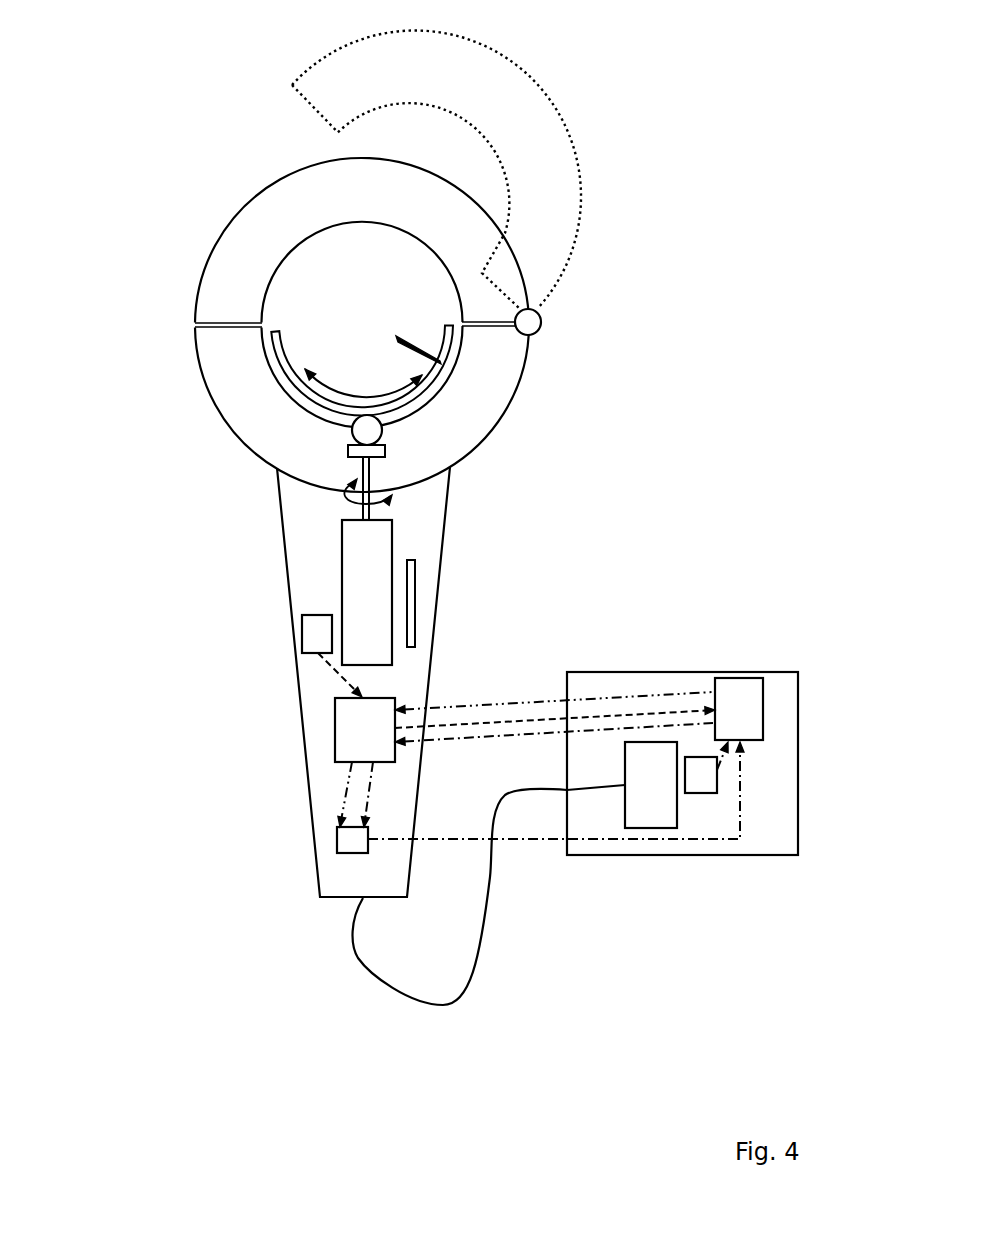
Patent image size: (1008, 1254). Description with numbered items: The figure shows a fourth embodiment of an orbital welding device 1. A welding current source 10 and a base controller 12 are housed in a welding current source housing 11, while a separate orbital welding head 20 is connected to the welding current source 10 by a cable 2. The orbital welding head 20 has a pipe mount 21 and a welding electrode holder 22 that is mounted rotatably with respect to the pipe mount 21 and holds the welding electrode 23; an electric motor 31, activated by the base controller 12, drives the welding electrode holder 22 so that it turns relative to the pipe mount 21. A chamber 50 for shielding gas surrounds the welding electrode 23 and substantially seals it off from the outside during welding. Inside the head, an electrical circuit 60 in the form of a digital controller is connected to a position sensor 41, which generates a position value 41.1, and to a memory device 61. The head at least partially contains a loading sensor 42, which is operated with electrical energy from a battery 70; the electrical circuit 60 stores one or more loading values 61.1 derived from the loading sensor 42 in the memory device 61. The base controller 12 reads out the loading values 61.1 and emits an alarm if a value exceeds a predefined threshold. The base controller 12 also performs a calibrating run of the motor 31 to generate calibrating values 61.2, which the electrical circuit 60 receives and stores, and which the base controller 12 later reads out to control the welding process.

The orbital welding device 1 is at (780, 287).
The cable 2 is at (358, 958).
The welding current source 10 is at (652, 828).
The welding current source housing 11 is at (665, 672).
The base controller 12 is at (753, 712).
The orbital welding head 20 is at (172, 736).
The pipe mount 21 is at (575, 202).
The welding electrode holder 22 is at (460, 352).
The welding electrode 23 is at (422, 343).
The electric motor 31 is at (358, 590).
The position sensor 41 is at (302, 638).
The loading sensor 42 is at (693, 793).
The position value 41.1 is at (337, 677).
The chamber for shielding gas 50 is at (283, 310).
The electrical circuit 60 is at (335, 717).
The memory device 61 is at (337, 840).
The loading value 61.1 is at (458, 740).
The calibrating value 61.2 is at (340, 818).
The battery 70 is at (417, 588).